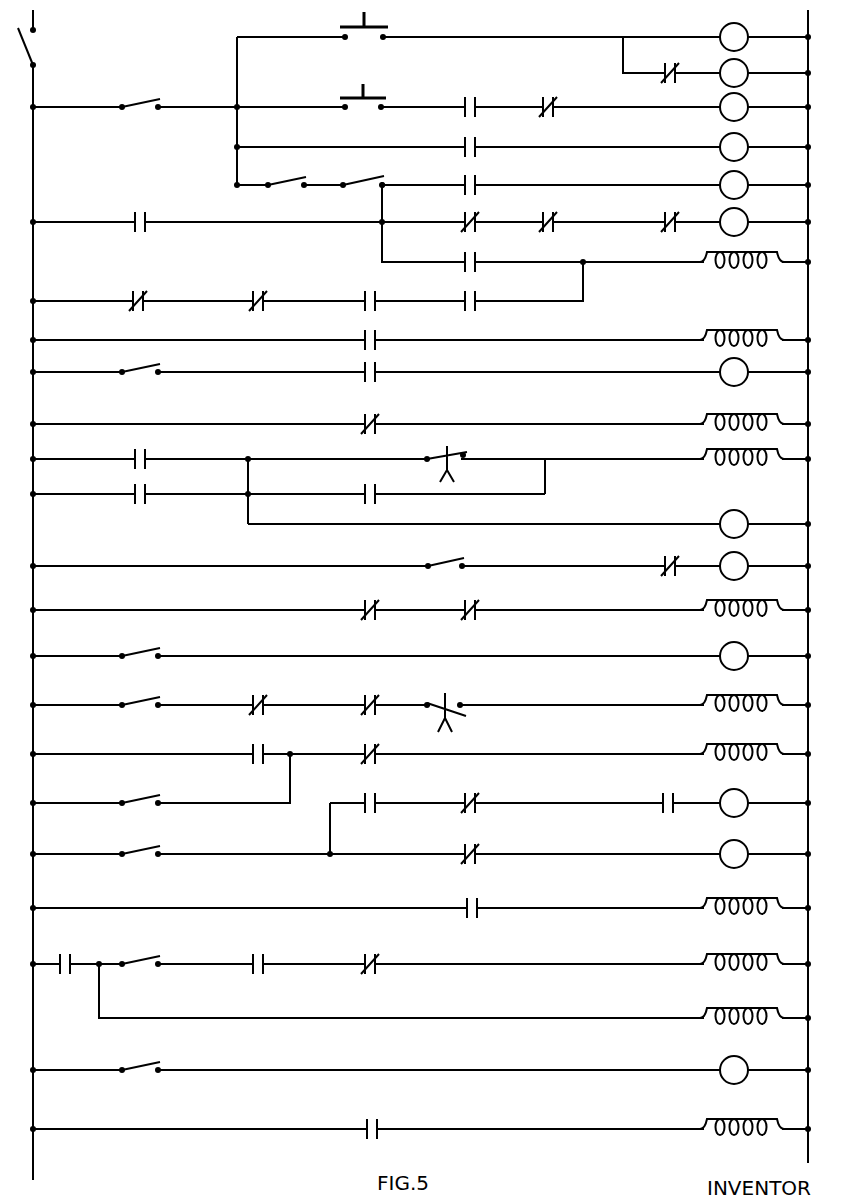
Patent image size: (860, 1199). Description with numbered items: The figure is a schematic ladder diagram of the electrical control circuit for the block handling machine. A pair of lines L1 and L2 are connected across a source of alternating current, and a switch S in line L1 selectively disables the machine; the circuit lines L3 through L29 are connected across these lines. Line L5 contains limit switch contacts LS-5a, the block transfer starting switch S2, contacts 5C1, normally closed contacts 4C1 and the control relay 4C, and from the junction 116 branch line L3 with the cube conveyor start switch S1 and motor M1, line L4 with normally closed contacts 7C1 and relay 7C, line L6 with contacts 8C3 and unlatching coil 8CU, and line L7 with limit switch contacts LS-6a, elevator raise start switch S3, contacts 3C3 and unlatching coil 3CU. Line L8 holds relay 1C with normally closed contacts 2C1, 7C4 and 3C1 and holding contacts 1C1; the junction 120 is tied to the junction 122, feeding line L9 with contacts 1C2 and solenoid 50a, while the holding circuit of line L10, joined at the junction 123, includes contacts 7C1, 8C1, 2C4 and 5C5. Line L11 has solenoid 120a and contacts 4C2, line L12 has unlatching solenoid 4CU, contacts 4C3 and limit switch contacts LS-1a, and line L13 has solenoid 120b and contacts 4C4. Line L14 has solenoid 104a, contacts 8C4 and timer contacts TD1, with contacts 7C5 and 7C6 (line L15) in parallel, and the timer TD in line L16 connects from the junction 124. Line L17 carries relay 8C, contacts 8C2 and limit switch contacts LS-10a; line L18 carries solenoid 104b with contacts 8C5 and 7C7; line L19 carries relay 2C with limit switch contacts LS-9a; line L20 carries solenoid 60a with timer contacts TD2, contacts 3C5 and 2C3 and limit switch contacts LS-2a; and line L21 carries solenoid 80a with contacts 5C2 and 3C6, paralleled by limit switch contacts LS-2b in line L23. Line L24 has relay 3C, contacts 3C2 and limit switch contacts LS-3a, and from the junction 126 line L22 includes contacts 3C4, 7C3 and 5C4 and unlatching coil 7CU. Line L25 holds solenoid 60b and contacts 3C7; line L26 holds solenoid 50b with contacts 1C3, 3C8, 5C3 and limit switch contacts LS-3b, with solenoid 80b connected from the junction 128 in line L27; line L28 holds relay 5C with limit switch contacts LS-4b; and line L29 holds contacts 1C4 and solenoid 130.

The line L1 is at (36, 14).
The line L2 is at (810, 20).
The switch S is at (36, 54).
The circuit line L3 is at (588, 37).
The circuit line L4 is at (654, 75).
The circuit line L5 is at (657, 108).
The circuit line L6 is at (657, 148).
The circuit line L7 is at (659, 186).
The circuit line L8 is at (627, 223).
The circuit line L9 is at (659, 265).
The holding circuit line L10 is at (556, 309).
The circuit line L11 is at (595, 340).
The circuit line L12 is at (595, 372).
The circuit line L13 is at (595, 424).
The circuit line L14 is at (595, 459).
The circuit line L15 is at (485, 497).
The circuit line L16 is at (595, 524).
The circuit line L17 is at (595, 566).
The circuit line L18 is at (595, 610).
The circuit line L19 is at (595, 656).
The circuit line L20 is at (595, 705).
The circuit line L21 is at (595, 754).
The circuit line L22 is at (591, 803).
The circuit line L23 is at (252, 803).
The circuit line L24 is at (591, 854).
The circuit line L25 is at (591, 908).
The circuit line L26 is at (591, 964).
The circuit line L27 is at (591, 1018).
The circuit line L28 is at (591, 1070).
The circuit line L29 is at (591, 1129).
The junction 116 is at (232, 112).
The junction 120 is at (380, 187).
The junction 122 is at (380, 224).
The junction 123 is at (582, 260).
The junction 124 is at (246, 494).
The junction 126 is at (328, 853).
The junction 128 is at (97, 966).
The cube conveyor start switch S1 is at (374, 30).
The block transfer starting switch S2 is at (371, 98).
The elevator raise start switch S3 is at (364, 181).
The limit switch contacts LS-5a is at (138, 103).
The limit switch contacts LS-6a is at (284, 183).
The limit switch contacts LS-1a is at (141, 378).
The limit switch contacts LS-10a is at (450, 548).
The limit switch contacts LS-9a is at (140, 652).
The limit switch contacts LS-2a is at (140, 702).
The limit switch contacts LS-2b is at (140, 799).
The limit switch contacts LS-3a is at (140, 849).
The limit switch contacts LS-3b is at (140, 955).
The limit switch contacts LS-4b is at (140, 1065).
The timer contacts TD1 is at (447, 450).
The timer contacts TD2 is at (445, 696).
The normally open contacts 5C1 is at (473, 96).
The normally open contacts 8C3 is at (459, 136).
The normally open contacts 3C3 is at (459, 175).
The normally open holding contacts 1C1 is at (135, 208).
The normally open contacts 1C2 is at (459, 253).
The normally open contacts 5C5 is at (357, 291).
The normally open contacts 2C4 is at (462, 291).
The normally open contacts 4C2 is at (362, 334).
The normally open contacts 4C3 is at (362, 366).
The normally open contacts 8C4 is at (132, 450).
The normally open contacts 7C5 is at (132, 486).
The normally open contacts 7C6 is at (364, 487).
The normally open contacts 3C6 is at (250, 742).
The normally open contacts 3C4 is at (364, 794).
The normally open contacts 7C3 is at (668, 793).
The normally open contacts 3C7 is at (478, 896).
The contacts 5C3 is at (66, 954).
The contacts 3C8 is at (253, 954).
The normally open contacts 1C4 is at (378, 1121).
The normally closed contacts 7C1 is at (668, 73).
The normally closed contacts 4C1 is at (550, 96).
The normally closed contacts 3C1 is at (459, 213).
The normally closed contacts 7C4 is at (547, 214).
The normally closed contacts 2C1 is at (666, 222).
The normally closed contacts 8C1 is at (126, 291).
The normally closed contacts 4C4 is at (362, 418).
The normally closed contacts 8C2 is at (666, 558).
The normally closed contacts 7C7 is at (365, 601).
The normally closed contacts 8C5 is at (480, 602).
The normally closed contacts 2C3 is at (258, 688).
The normally closed contacts 3C5 is at (369, 689).
The normally closed contacts 5C2 is at (366, 742).
The normally closed contacts 5C4 is at (477, 787).
The normally closed contacts 3C2 is at (478, 848).
The normally closed contacts 1C3 is at (364, 954).
The electrical motor M1 is at (742, 47).
The control relay 7C is at (742, 82).
The control relay 4C is at (742, 118).
The unlatching coil 8CU is at (742, 157).
The unlatching coil 3CU is at (742, 196).
The control relay 1C is at (742, 234).
The unlatching solenoid 4CU is at (743, 368).
The timer TD is at (748, 524).
The control relay 8C is at (743, 562).
The control relay 2C is at (742, 668).
The unlatching coil 7CU is at (741, 815).
The control relay 3C is at (741, 866).
The control relay 5C is at (741, 1082).
The solenoid 50a is at (744, 272).
The solenoid 120a is at (742, 328).
The solenoid 120b is at (742, 412).
The solenoid 104a is at (737, 468).
The solenoid 104b is at (739, 620).
The solenoid 60a is at (747, 712).
The solenoid 80a is at (742, 763).
The solenoid 60b is at (742, 916).
The solenoid 50b is at (742, 972).
The solenoid 80b is at (742, 1026).
The solenoid 130 is at (745, 1137).